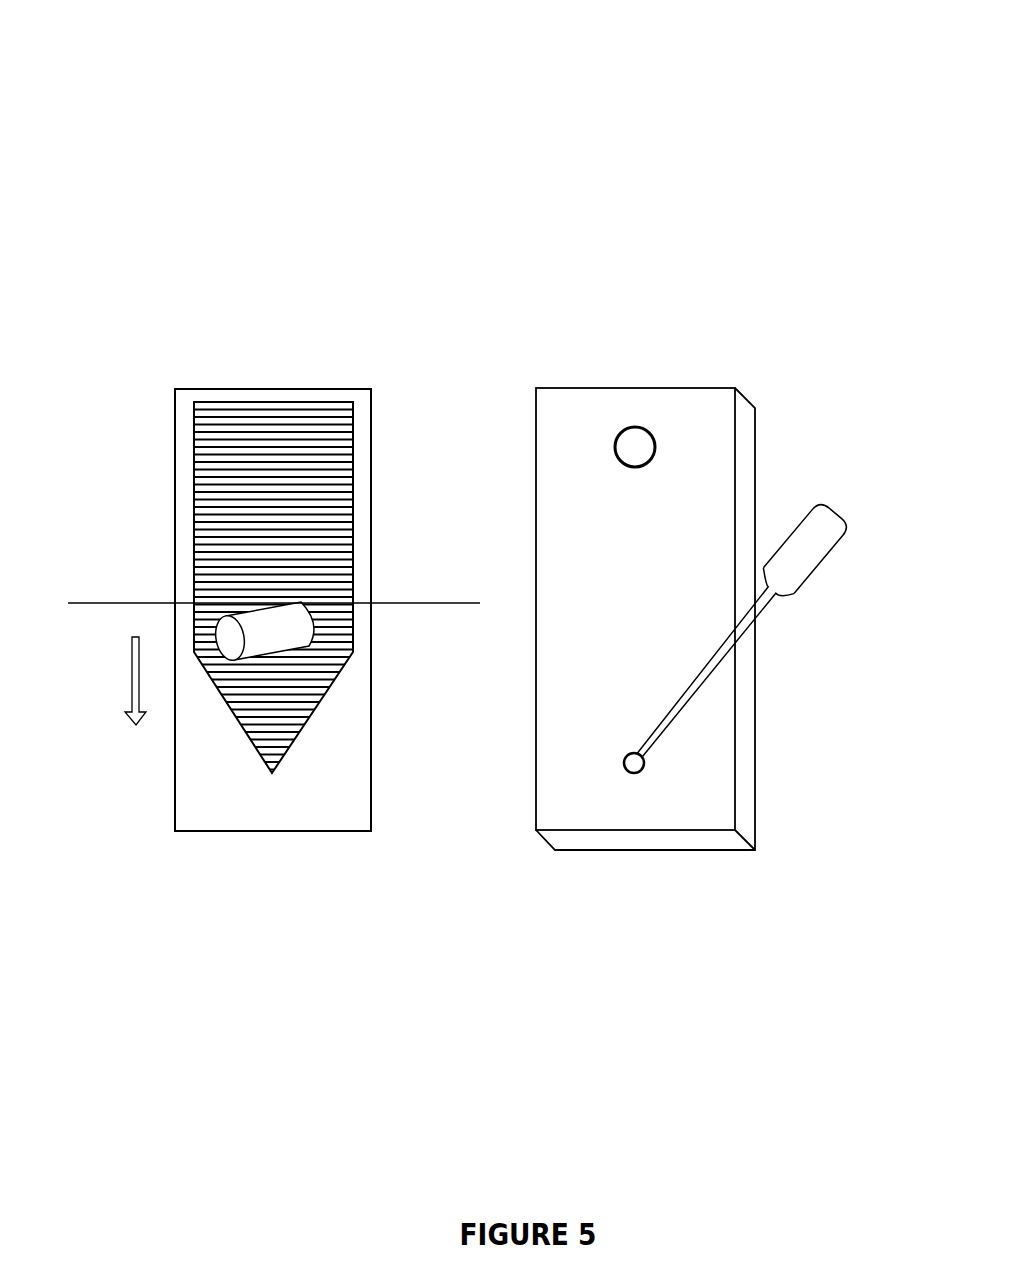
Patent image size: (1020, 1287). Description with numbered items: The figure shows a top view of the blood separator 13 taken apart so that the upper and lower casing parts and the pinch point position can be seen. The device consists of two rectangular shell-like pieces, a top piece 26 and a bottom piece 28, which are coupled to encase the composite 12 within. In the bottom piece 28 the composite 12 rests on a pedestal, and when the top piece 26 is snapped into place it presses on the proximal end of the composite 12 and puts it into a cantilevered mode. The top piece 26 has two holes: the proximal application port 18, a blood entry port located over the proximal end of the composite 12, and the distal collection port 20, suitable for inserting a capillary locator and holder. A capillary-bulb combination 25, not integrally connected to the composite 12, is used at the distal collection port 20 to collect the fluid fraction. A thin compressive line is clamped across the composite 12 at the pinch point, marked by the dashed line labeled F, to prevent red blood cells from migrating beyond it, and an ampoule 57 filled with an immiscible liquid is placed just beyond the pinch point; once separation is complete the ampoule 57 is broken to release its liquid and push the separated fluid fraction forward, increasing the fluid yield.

The blood separator 13 is at (252, 132).
The composite 12 is at (304, 413).
The proximal application port 18 is at (615, 446).
The distal collection port 20 is at (625, 759).
The capillary-bulb combination 25 is at (778, 607).
The top piece 26 is at (668, 803).
The bottom piece 28 is at (282, 823).
The ampoule 57 is at (303, 640).